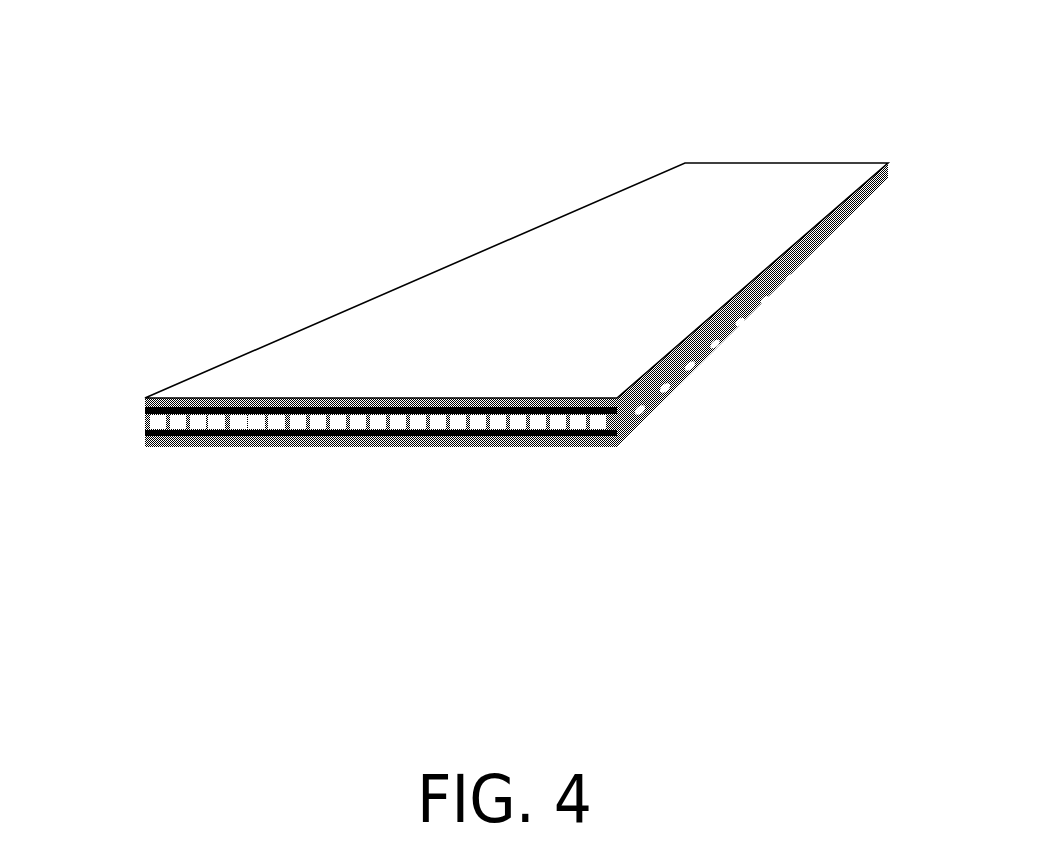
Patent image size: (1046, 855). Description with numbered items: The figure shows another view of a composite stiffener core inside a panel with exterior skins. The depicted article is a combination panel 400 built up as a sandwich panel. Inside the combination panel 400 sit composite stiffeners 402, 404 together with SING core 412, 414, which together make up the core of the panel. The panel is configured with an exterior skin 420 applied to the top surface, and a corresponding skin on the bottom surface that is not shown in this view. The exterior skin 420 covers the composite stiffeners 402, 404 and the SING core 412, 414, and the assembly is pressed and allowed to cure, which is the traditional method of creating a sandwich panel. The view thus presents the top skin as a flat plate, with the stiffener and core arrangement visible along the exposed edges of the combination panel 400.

The combination panel 400 is at (678, 45).
The composite stiffener 402 is at (330, 444).
The composite stiffener 404 is at (378, 453).
The SING core 412 is at (453, 452).
The SING core 414 is at (705, 328).
The exterior skin 420 is at (516, 280).